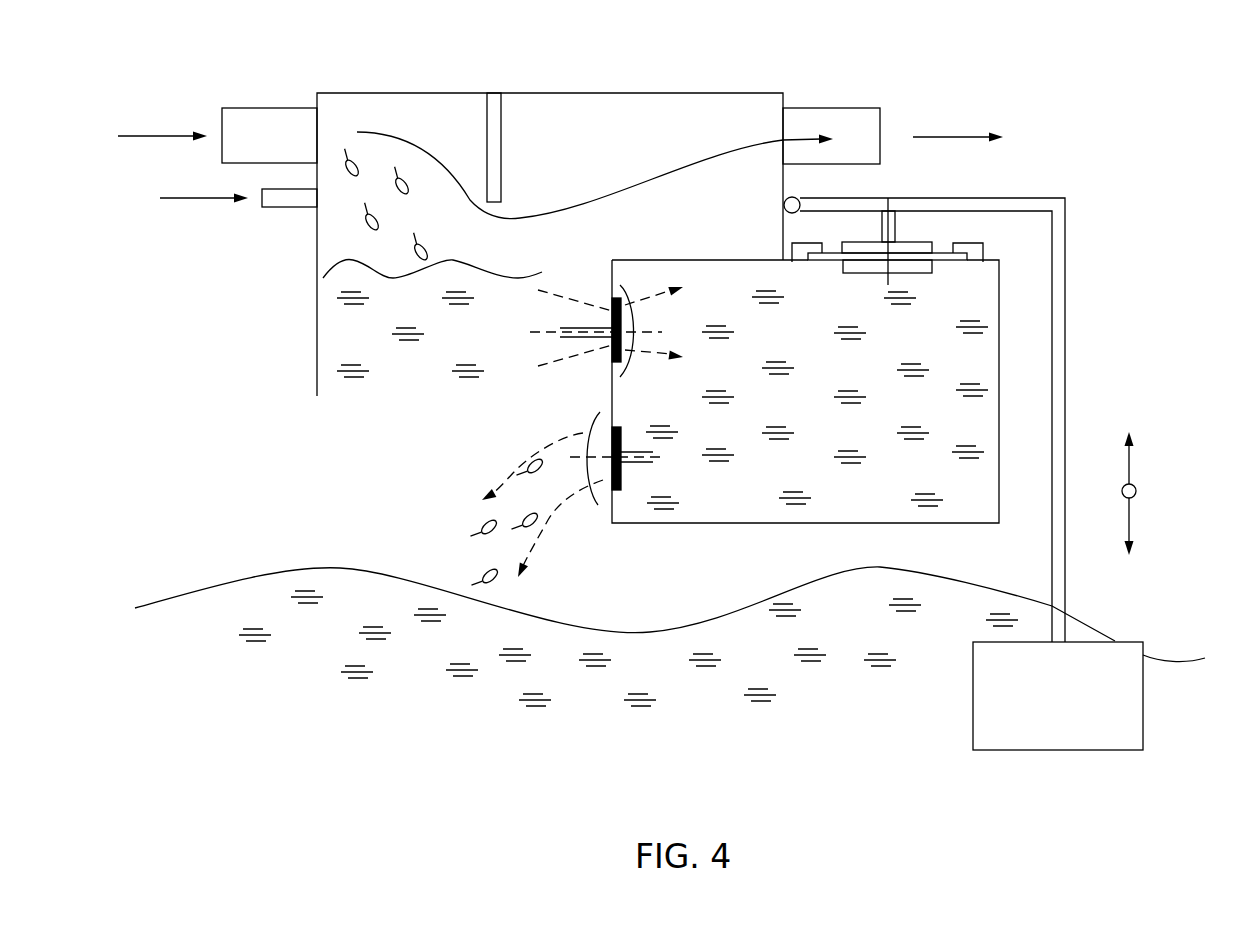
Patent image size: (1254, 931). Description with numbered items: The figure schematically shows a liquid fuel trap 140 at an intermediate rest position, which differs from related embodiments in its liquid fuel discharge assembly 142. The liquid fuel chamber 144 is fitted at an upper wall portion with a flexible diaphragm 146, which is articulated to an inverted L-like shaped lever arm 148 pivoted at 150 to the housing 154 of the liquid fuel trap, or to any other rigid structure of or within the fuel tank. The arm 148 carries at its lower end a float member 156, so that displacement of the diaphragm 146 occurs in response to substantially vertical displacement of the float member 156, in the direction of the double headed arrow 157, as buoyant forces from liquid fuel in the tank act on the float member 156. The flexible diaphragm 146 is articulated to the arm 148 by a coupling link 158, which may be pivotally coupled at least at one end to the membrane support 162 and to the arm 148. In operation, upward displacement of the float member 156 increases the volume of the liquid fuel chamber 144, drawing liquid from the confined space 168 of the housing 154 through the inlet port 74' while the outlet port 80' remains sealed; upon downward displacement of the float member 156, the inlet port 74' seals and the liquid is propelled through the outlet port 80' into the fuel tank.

The liquid fuel trap 140 is at (263, 373).
The liquid fuel discharge assembly 142 is at (1017, 337).
The liquid fuel chamber 144 is at (999, 391).
The flexible diaphragm 146 is at (968, 258).
The lever arm 148 is at (1040, 197).
The pivot 150 is at (793, 203).
The housing 154 is at (550, 93).
The float member 156 is at (1112, 687).
The double headed arrow 157 is at (1136, 491).
The coupling link 158 is at (900, 227).
The membrane support 162 is at (857, 248).
The confined space 168 is at (415, 363).
The inlet port 74' is at (598, 354).
The outlet port 80' is at (567, 502).